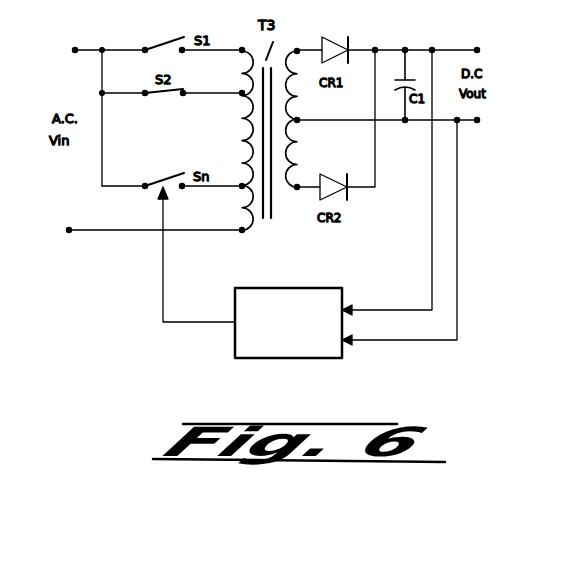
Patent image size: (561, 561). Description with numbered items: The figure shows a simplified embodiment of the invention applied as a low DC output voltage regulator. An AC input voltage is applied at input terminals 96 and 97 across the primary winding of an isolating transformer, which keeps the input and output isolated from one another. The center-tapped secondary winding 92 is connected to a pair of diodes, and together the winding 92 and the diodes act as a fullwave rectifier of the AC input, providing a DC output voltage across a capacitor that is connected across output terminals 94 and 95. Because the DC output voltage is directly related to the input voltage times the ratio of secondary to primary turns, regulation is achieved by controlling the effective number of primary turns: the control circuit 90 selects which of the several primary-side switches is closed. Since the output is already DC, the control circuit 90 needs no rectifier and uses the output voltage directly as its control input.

The control circuit 90 is at (318, 272).
The secondary winding 92 is at (298, 48).
The output terminal 94 is at (478, 47).
The output terminal 95 is at (477, 123).
The input terminal 96 is at (75, 47).
The input terminal 97 is at (69, 233).